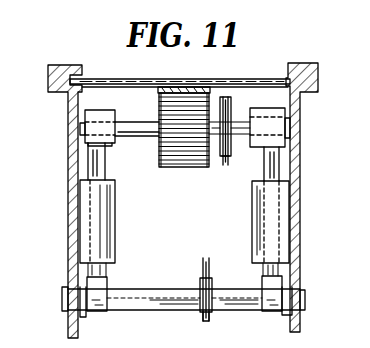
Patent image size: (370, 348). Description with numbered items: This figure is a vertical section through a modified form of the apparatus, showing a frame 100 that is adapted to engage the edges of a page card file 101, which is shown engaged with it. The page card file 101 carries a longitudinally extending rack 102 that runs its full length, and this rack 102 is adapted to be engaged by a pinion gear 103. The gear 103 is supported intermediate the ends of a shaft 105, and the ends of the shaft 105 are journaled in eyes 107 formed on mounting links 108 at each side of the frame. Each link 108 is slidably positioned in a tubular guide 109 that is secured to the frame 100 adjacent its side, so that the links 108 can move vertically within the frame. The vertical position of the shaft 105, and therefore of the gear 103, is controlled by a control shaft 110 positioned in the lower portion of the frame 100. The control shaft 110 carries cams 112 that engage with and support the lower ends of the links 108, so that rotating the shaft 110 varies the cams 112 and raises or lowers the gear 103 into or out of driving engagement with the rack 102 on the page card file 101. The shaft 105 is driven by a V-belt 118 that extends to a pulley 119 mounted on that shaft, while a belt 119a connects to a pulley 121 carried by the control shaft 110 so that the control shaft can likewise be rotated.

The frame 100 is at (68, 280).
The page card file 101 is at (243, 79).
The rack 102 is at (158, 91).
The pinion gear 103 is at (205, 167).
The shaft 105 is at (148, 121).
The eye 107 is at (110, 141).
The mounting link 108 is at (105, 169).
The tubular guide 109 is at (115, 230).
The control shaft 110 is at (160, 311).
The cam 112 is at (107, 284).
The V-belt 118 is at (229, 160).
The pulley 119 is at (232, 110).
The belt 119a is at (215, 247).
The pulley 121 is at (201, 313).